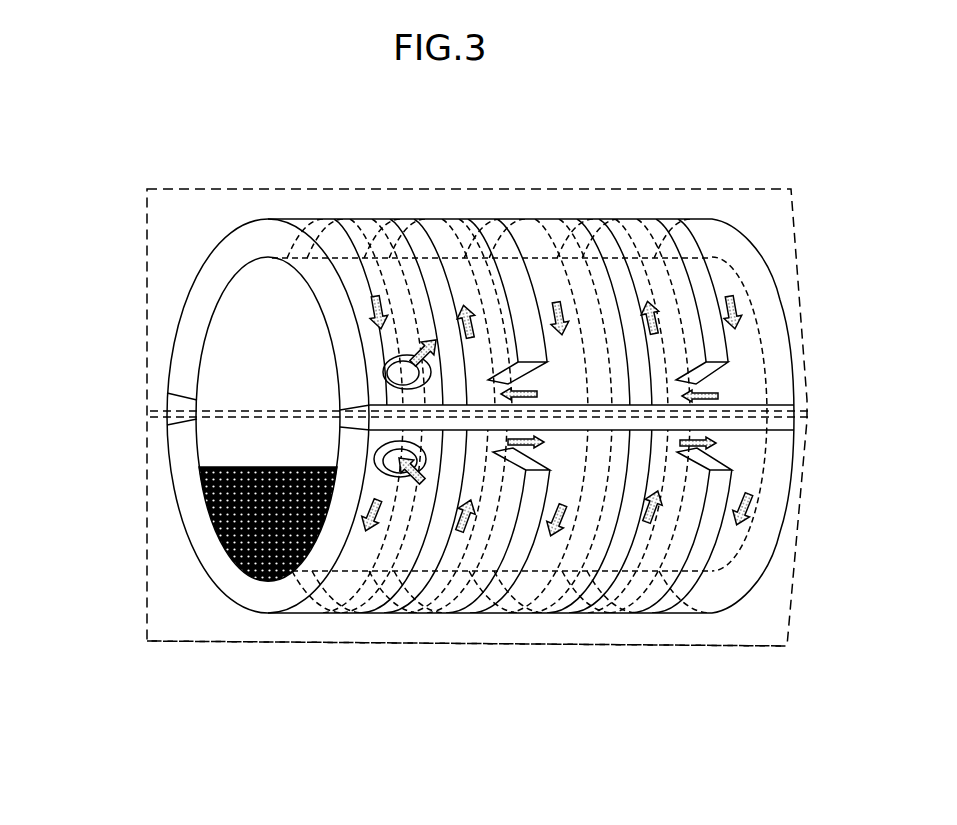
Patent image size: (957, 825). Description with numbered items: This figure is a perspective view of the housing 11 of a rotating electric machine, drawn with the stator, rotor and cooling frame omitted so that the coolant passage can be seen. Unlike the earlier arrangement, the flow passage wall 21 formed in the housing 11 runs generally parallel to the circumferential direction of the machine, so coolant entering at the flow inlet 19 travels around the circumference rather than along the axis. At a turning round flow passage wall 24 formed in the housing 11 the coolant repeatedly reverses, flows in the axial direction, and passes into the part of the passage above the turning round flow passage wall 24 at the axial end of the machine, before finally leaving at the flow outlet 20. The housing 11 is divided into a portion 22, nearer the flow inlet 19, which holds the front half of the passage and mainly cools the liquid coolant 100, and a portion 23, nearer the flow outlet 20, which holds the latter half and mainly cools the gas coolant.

The housing 11 is at (553, 217).
The flow inlet 19 is at (400, 470).
The flow outlet 20 is at (411, 362).
The flow passage wall 21 is at (657, 612).
The portion that cools the liquid coolant and the stator core 22 is at (216, 642).
The portion that cools the gas coolant and the stator core 23 is at (213, 188).
The turning round flow passage wall 24 is at (547, 430).
The liquid coolant 100 is at (212, 513).